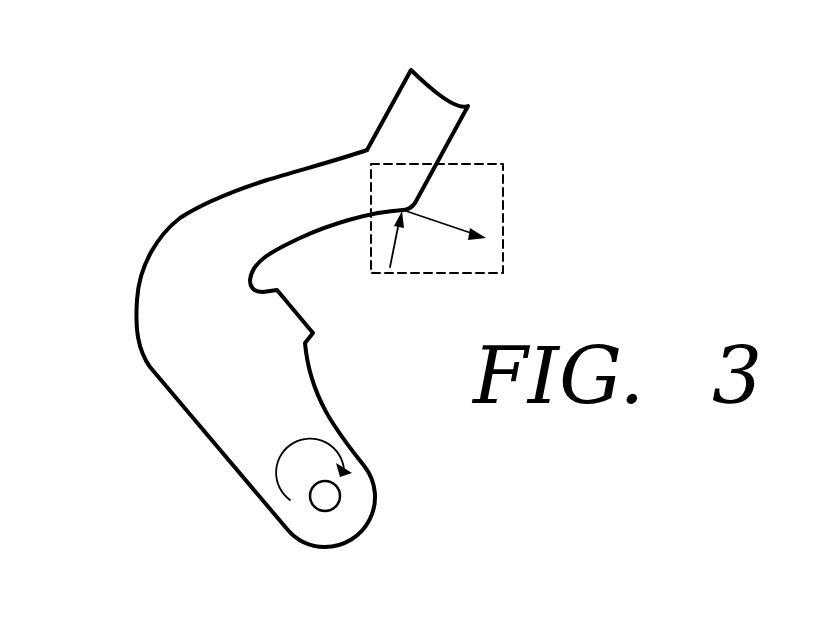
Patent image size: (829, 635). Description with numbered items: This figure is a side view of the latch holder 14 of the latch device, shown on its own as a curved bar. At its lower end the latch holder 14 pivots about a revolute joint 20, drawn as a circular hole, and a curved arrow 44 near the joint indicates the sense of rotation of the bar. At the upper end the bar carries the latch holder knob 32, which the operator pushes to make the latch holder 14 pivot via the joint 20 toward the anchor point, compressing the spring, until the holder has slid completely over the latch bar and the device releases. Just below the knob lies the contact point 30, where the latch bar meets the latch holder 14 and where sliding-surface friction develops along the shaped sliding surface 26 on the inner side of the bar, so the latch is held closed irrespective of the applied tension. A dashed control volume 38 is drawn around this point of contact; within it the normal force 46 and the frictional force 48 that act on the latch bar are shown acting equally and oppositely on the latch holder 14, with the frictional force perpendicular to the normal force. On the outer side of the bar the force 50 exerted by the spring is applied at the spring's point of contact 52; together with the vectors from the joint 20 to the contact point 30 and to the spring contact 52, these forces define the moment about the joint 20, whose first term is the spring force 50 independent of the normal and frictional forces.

The latch holder 14 is at (203, 217).
The joint 20 is at (317, 502).
The sliding surface 26 is at (322, 232).
The contact point 30 is at (403, 210).
The latch holder knob 32 is at (415, 90).
The control volume 38 is at (503, 203).
The direction of rotation 44 is at (293, 483).
The normal force 46 is at (408, 241).
The frictional force 48 is at (444, 220).
The force exerted by the spring 50 is at (138, 330).
The point of contact of the spring 52 is at (140, 330).